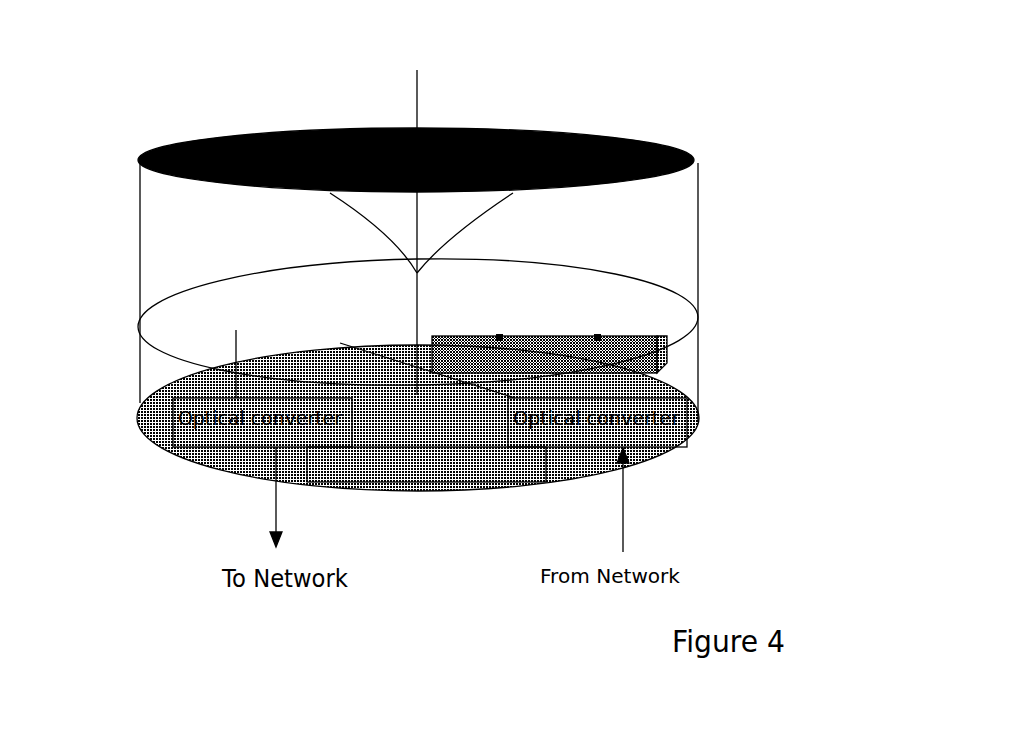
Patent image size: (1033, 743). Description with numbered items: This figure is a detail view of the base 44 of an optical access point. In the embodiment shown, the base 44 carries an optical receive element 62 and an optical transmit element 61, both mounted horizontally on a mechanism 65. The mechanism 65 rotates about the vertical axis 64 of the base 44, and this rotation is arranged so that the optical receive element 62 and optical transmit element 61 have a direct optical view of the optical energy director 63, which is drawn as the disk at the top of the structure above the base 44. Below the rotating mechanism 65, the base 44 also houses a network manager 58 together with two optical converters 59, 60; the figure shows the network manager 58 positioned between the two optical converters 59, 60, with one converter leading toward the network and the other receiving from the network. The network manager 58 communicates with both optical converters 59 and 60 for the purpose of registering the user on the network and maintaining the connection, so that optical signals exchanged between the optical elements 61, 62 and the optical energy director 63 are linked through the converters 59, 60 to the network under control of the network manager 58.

The base 44 is at (163, 610).
The network manager 58 is at (430, 485).
The optical converter 59 is at (157, 443).
The optical converter 60 is at (700, 421).
The optical transmit element 61 is at (470, 340).
The optical receive element 62 is at (599, 338).
The optical energy director 63 is at (597, 135).
The vertical axis 64 is at (419, 80).
The mechanism 65 is at (664, 338).